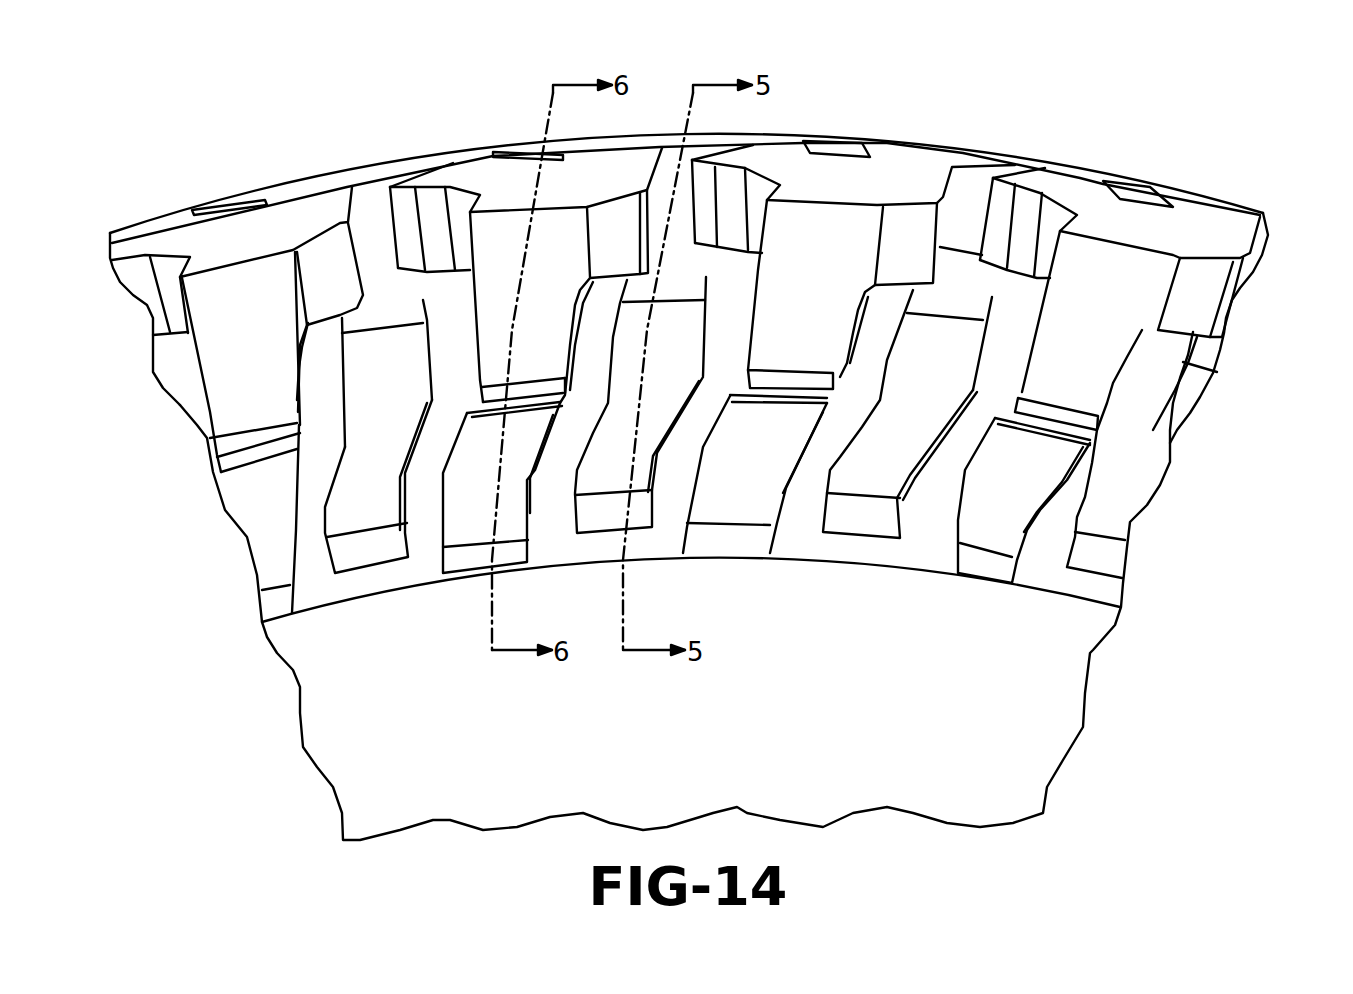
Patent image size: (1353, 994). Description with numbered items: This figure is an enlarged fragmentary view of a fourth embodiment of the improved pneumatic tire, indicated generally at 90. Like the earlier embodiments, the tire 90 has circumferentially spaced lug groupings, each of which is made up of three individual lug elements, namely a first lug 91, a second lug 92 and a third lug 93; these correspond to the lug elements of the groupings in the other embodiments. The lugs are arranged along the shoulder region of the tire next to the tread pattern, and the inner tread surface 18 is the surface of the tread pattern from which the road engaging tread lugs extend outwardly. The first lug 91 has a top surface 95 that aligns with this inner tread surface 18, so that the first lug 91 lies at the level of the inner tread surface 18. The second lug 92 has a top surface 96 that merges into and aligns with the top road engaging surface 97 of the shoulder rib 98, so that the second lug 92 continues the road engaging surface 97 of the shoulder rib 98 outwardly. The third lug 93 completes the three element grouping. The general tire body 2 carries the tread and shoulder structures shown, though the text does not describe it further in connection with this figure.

The rotor body 2 is at (332, 733).
The inner tread surface 18 is at (395, 287).
The fourth pneumatic tire embodiment 90 is at (1193, 187).
The first lug 91 is at (368, 530).
The second lug 92 is at (257, 293).
The third lug 93 is at (222, 498).
The top surface of first lug 95 is at (947, 305).
The top surface of second lug 96 is at (867, 197).
The top road engaging surface 97 is at (230, 235).
The shoulder rib 98 is at (172, 230).